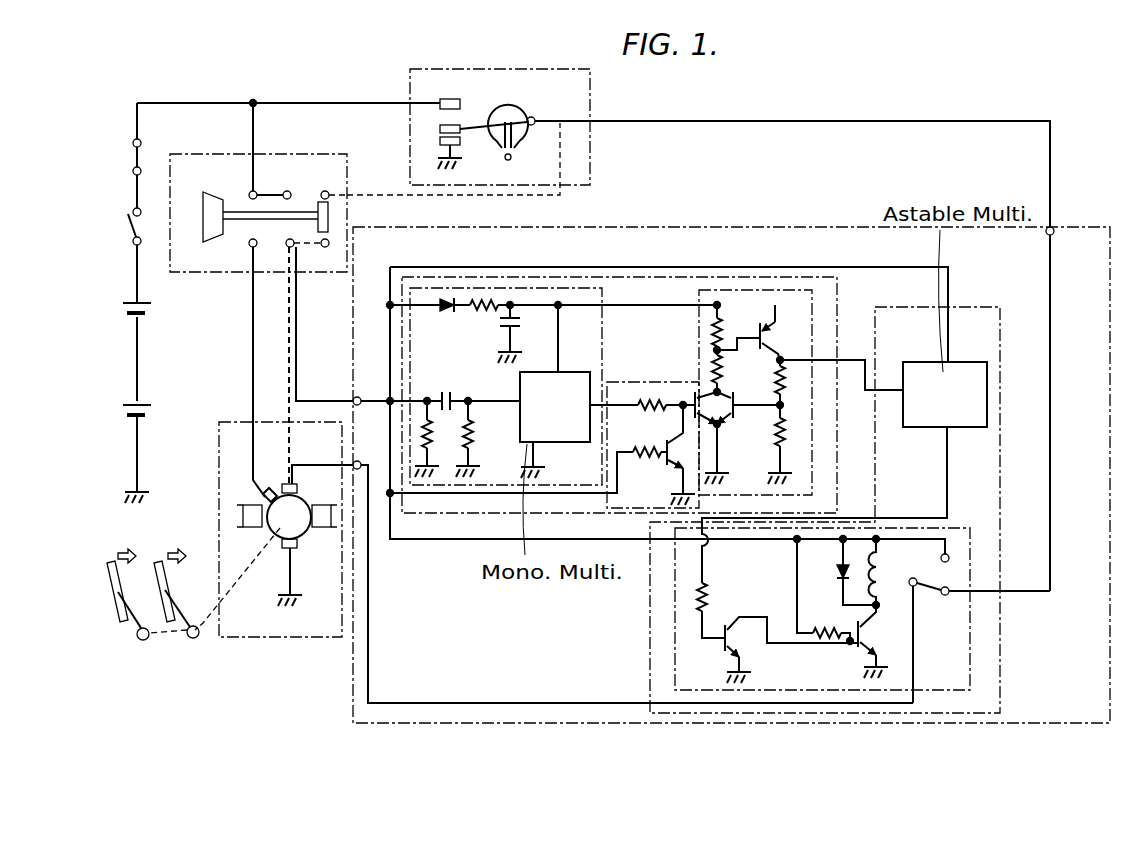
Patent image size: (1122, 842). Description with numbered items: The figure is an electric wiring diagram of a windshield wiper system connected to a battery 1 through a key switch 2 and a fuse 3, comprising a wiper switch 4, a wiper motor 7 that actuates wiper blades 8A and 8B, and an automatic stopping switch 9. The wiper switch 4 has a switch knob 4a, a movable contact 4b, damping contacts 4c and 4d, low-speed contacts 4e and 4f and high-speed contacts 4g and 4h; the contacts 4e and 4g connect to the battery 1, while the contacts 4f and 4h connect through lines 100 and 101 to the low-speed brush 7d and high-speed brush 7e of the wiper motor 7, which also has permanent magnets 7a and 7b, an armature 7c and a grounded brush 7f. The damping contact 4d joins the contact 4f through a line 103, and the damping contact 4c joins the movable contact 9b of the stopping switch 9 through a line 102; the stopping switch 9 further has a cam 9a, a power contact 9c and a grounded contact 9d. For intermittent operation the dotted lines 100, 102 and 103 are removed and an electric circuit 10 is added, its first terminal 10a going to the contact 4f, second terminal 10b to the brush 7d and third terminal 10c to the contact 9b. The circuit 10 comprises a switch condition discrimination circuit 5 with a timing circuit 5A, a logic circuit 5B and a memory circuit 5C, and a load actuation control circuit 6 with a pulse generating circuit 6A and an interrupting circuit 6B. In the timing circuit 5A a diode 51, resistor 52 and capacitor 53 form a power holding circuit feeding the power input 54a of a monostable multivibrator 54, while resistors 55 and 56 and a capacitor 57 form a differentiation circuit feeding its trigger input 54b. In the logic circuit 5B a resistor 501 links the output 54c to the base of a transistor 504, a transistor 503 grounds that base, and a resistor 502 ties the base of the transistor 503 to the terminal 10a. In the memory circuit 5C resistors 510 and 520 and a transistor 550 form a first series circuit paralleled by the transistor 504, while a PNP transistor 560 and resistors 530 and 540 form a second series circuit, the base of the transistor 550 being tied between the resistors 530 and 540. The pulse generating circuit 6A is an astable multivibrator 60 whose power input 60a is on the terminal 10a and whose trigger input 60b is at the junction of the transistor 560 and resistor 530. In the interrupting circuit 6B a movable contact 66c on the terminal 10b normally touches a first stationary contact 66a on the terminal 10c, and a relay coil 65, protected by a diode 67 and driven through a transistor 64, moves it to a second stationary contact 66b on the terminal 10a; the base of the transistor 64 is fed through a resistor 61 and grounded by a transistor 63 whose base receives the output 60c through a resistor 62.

The battery 1 is at (140, 366).
The key switch 2 is at (128, 230).
The fuse 3 is at (132, 158).
The wiper switch 4 is at (183, 153).
The switch knob 4a is at (203, 225).
The movable contact 4b is at (329, 215).
The damping contact 4c is at (329, 193).
The damping contact 4d is at (327, 248).
The low-speed contact 4e is at (288, 191).
The low-speed contact 4f is at (288, 248).
The high-speed contact 4g is at (250, 191).
The high-speed contact 4h is at (250, 246).
The switch condition discrimination circuit 5 is at (632, 277).
The timing circuit 5A is at (515, 288).
The logic circuit 5B is at (668, 382).
The memory circuit 5C is at (706, 290).
The load actuation control circuit 6 is at (970, 307).
The pulse generating circuit 6A is at (912, 362).
The interrupting circuit 6B is at (955, 528).
The wiper motor 7 is at (258, 637).
The permanent magnet 7a is at (245, 530).
The permanent magnet 7b is at (325, 530).
The armature 7c is at (284, 493).
The low-speed brush 7d is at (298, 488).
The high-speed brush 7e is at (263, 494).
The common grounded brush 7f is at (283, 556).
The windshield wiper blade 8A is at (172, 580).
The windshield wiper blade 8B is at (110, 580).
The automatic stopping switch 9 is at (432, 69).
The cam 9a is at (529, 160).
The movable contact 9b is at (440, 129).
The power contact 9c is at (461, 105).
The grounded contact 9d is at (440, 141).
The electric circuit 10 is at (806, 227).
The first terminal 10a is at (353, 398).
The second terminal 10b is at (358, 461).
The third terminal 10c is at (1054, 230).
The diode 51 is at (444, 312).
The resistor 52 is at (482, 312).
The capacitor 53 is at (520, 323).
The monostable multivibrator 54 is at (555, 445).
The power input 54a is at (560, 362).
The trigger input 54b is at (518, 400).
The output 54c is at (596, 400).
The resistor 55 is at (430, 440).
The resistor 56 is at (472, 438).
The capacitor 57 is at (446, 391).
The astable multivibrator 60 is at (918, 428).
The power input 60a is at (950, 362).
The trigger input 60b is at (900, 397).
The output 60c is at (950, 432).
The resistor 61 is at (825, 628).
The resistor 62 is at (710, 595).
The transistor 63 is at (744, 645).
The transistor 64 is at (850, 650).
The relay coil 65 is at (883, 570).
The first stationary contact 66a is at (950, 597).
The second stationary contact 66b is at (950, 558).
The movable contact 66c is at (916, 590).
The diode 67 is at (835, 575).
The line 100 is at (287, 370).
The line 101 is at (250, 321).
The line 102 is at (470, 195).
The line 103 is at (320, 324).
The resistor 501 is at (652, 412).
The resistor 502 is at (615, 505).
The transistor 503 is at (650, 458).
The transistor 504 is at (705, 420).
The resistor 510 is at (720, 335).
The resistor 520 is at (721, 370).
The resistor 530 is at (784, 380).
The resistor 540 is at (784, 435).
The transistor 550 is at (735, 420).
The PNP transistor 560 is at (768, 343).